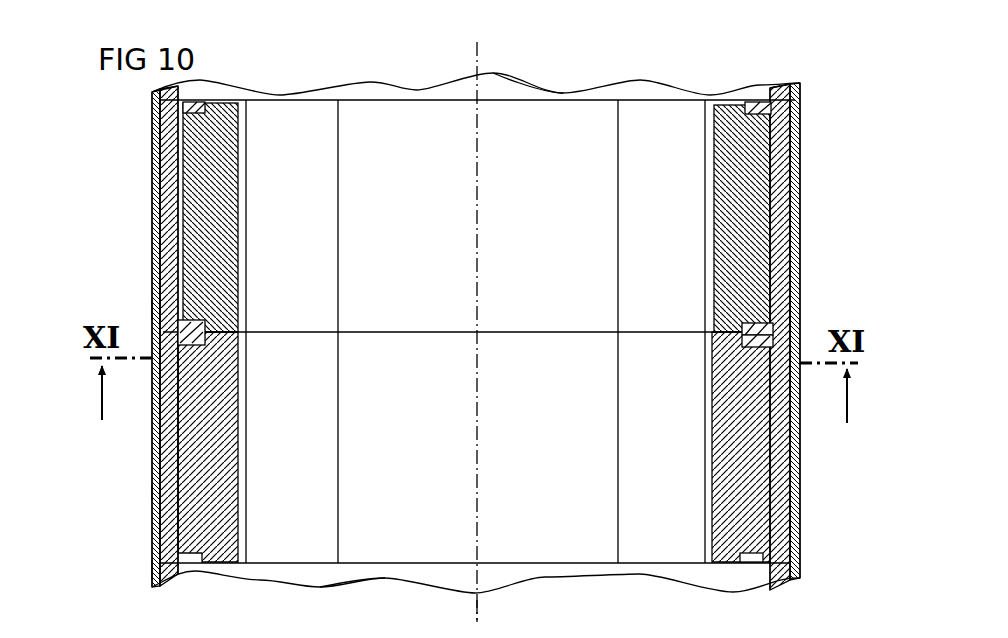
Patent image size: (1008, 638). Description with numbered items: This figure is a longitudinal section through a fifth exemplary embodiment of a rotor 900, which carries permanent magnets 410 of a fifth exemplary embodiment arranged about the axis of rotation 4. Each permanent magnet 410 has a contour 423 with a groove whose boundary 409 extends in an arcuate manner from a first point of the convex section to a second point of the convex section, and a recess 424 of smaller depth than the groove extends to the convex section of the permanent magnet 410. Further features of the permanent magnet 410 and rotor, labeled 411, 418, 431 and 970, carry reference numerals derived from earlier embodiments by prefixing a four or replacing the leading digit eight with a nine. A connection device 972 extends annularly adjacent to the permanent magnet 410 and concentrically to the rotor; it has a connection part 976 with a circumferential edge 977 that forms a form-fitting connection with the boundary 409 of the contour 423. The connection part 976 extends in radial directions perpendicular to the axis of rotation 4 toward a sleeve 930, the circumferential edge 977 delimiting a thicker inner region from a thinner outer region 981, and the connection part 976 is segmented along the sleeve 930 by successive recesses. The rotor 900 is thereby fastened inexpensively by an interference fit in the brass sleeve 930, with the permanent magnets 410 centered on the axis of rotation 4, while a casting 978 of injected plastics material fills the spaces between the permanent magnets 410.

The axis of rotation 4 is at (478, 610).
The boundary 409 is at (158, 94).
The permanent magnet 410 is at (195, 207).
The housing wall 411 is at (143, 137).
The end seal 418 is at (194, 104).
The contour 423 is at (751, 98).
The recess 424 is at (775, 88).
The housing wall region 431 is at (146, 310).
The rotor 900 is at (566, 81).
The sleeve 930 is at (797, 530).
The wall section 970 is at (352, 608).
The connection device 972 is at (144, 565).
The connection part 976 is at (738, 326).
The circumferential edge 977 is at (760, 366).
The casting 978 is at (155, 492).
The outer region 981 is at (793, 320).